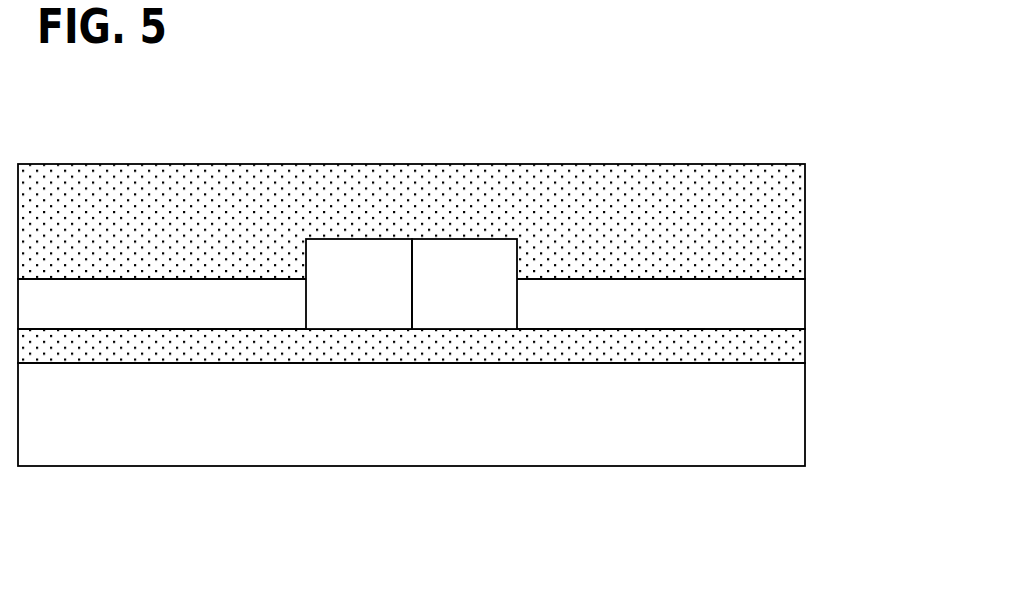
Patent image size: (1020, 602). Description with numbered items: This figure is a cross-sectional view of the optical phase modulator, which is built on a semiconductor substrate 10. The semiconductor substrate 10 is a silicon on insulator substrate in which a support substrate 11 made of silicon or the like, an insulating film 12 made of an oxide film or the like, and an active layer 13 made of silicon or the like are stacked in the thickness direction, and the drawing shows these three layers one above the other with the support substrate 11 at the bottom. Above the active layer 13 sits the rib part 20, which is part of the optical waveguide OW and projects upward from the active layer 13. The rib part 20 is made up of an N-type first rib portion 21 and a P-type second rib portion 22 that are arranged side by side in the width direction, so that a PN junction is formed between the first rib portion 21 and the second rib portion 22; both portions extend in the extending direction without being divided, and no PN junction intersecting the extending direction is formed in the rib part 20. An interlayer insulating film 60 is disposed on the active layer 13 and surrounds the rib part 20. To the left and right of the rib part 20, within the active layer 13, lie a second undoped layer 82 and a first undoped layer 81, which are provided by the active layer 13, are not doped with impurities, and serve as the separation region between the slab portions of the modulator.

The semiconductor substrate 10 is at (478, 372).
The support substrate 11 is at (450, 414).
The insulating film 12 is at (792, 342).
The active layer 13 is at (787, 310).
The rib part 20 is at (411, 410).
The first rib portion 21 is at (447, 318).
The second rib portion 22 is at (387, 316).
The interlayer insulating film 60 is at (787, 237).
The first undoped layer 81 is at (674, 319).
The second undoped layer 82 is at (88, 317).
The optical waveguide OW is at (412, 238).